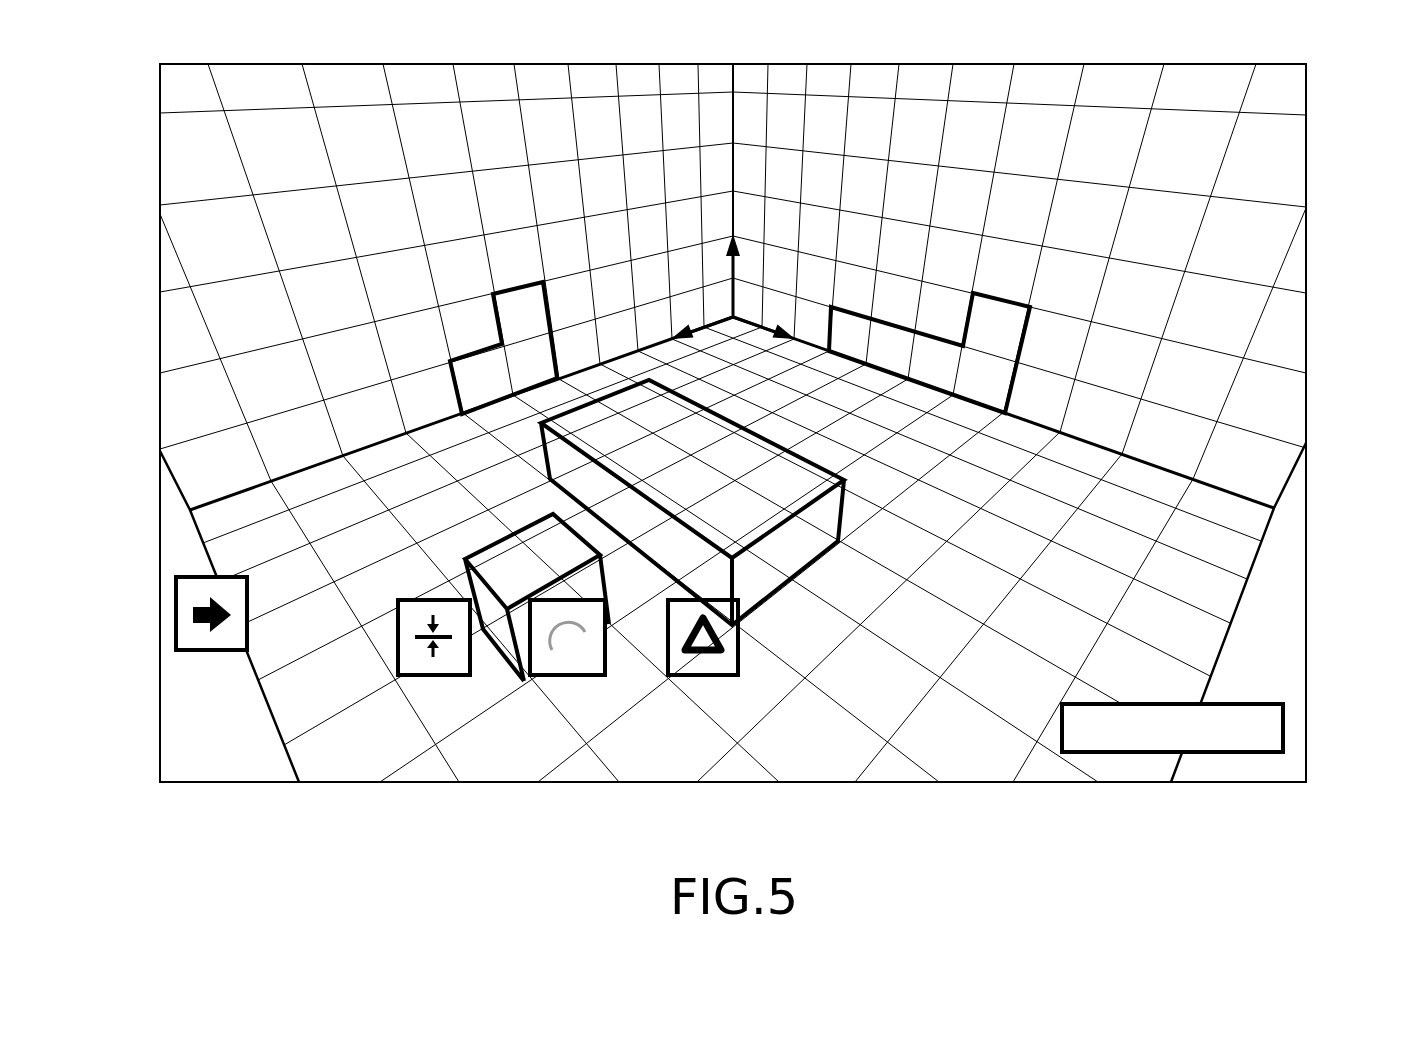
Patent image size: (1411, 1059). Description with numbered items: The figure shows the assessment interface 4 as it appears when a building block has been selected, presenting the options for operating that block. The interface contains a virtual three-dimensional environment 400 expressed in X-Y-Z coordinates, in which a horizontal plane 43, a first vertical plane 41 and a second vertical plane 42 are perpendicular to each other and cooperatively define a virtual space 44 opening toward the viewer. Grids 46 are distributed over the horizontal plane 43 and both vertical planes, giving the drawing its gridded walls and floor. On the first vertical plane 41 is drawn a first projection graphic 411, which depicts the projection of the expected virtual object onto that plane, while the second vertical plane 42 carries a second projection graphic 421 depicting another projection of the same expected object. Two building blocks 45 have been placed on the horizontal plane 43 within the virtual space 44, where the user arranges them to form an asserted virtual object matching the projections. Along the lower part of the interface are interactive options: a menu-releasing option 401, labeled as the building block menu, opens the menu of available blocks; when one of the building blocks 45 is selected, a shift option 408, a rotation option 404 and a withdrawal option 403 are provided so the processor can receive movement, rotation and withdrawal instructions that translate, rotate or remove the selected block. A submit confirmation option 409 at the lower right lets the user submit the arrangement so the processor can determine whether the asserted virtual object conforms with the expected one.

The assessment interface 4 is at (825, 64).
The virtual three-dimensional environment 400 is at (205, 238).
The first vertical plane 41 is at (639, 97).
The second vertical plane 42 is at (1050, 103).
The horizontal plane 43 is at (1147, 487).
The virtual space 44 is at (1238, 257).
The grids 46 is at (1200, 560).
The first projection graphic 411 is at (518, 290).
The second projection graphic 421 is at (1000, 292).
The building block 45 is at (487, 545).
The menu-releasing option 401 is at (193, 577).
The shift option 408 is at (398, 640).
The rotation option 404 is at (527, 640).
The withdrawal option 403 is at (667, 637).
The submit confirmation option 409 is at (1245, 704).